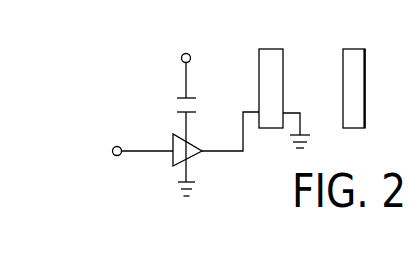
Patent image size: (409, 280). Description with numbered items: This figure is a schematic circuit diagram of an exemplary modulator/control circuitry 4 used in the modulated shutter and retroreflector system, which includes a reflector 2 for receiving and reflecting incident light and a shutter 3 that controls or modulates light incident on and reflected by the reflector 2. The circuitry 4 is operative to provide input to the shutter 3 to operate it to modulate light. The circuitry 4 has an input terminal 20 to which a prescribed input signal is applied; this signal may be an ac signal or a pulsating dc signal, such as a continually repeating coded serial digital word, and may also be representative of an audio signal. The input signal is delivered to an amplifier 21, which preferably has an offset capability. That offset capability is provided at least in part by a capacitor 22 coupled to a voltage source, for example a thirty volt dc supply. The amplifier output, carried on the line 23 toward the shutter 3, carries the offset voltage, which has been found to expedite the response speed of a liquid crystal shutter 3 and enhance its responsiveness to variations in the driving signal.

The reflector 2 is at (365, 63).
The shutter 3 is at (283, 62).
The modulator/control circuitry 4 is at (119, 97).
The input terminal 20 is at (117, 156).
The amplifier 21 is at (173, 163).
The capacitor 22 is at (198, 104).
The output line 23 is at (220, 152).